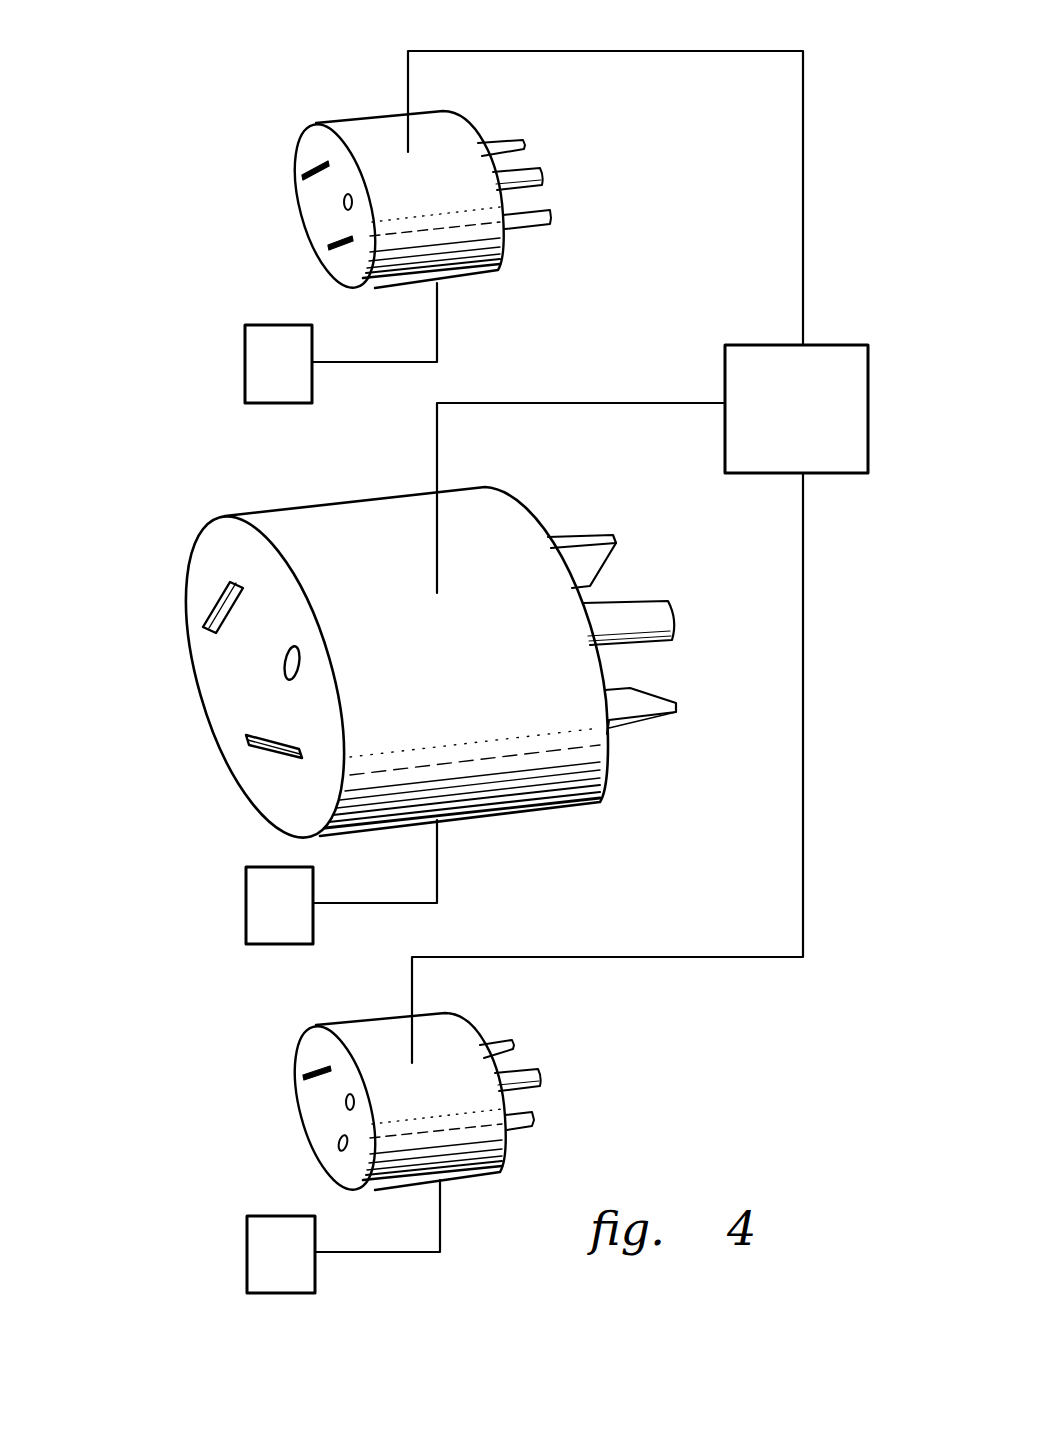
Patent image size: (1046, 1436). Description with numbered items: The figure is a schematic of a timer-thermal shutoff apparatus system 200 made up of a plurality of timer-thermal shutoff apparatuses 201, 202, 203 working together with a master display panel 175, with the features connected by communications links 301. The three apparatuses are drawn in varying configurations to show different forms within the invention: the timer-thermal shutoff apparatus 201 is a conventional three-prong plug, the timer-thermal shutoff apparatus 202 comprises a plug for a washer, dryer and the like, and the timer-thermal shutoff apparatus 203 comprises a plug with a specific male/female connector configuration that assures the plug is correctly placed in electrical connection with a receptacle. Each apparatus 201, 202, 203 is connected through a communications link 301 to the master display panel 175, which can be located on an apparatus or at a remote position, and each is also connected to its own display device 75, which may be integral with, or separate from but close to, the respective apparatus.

The timer-thermal shutoff apparatus system 200 is at (160, 148).
The timer-thermal shutoff apparatus 201 is at (463, 196).
The timer-thermal shutoff apparatus 202 is at (461, 671).
The timer-thermal shutoff apparatus 203 is at (470, 1090).
The display device 75 is at (302, 379).
The master display panel 175 is at (822, 453).
The communications links 301 is at (692, 52).